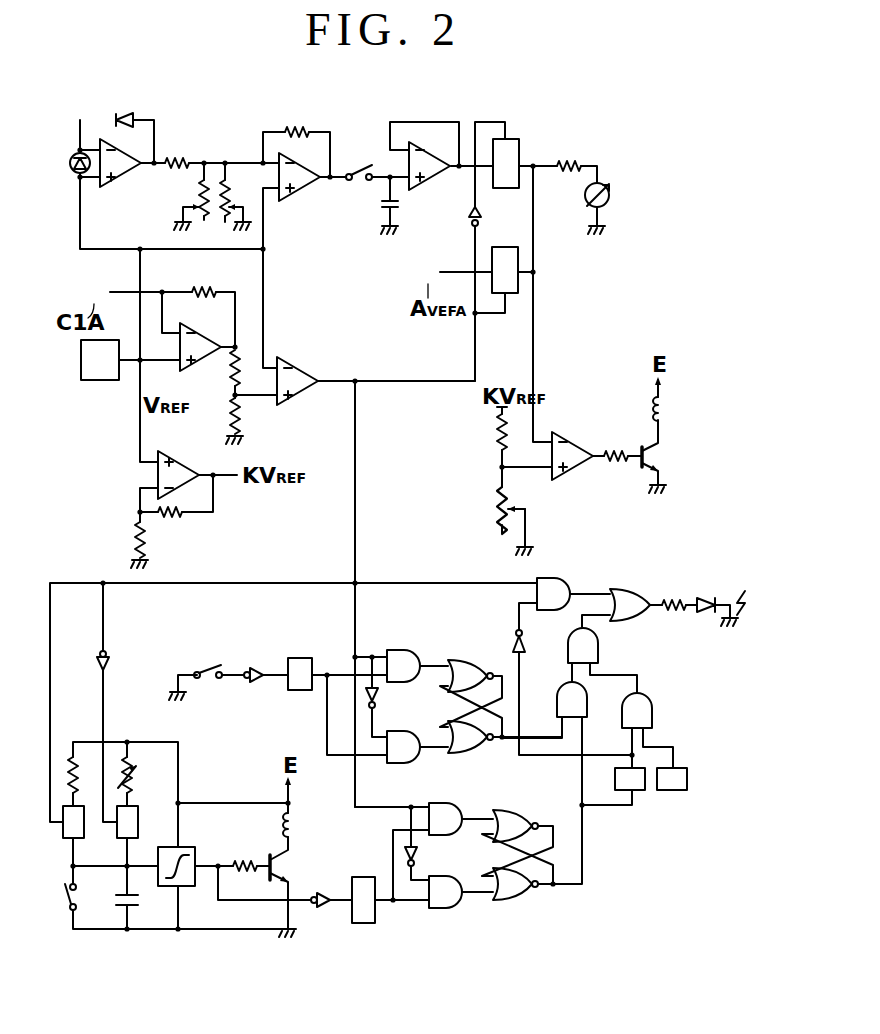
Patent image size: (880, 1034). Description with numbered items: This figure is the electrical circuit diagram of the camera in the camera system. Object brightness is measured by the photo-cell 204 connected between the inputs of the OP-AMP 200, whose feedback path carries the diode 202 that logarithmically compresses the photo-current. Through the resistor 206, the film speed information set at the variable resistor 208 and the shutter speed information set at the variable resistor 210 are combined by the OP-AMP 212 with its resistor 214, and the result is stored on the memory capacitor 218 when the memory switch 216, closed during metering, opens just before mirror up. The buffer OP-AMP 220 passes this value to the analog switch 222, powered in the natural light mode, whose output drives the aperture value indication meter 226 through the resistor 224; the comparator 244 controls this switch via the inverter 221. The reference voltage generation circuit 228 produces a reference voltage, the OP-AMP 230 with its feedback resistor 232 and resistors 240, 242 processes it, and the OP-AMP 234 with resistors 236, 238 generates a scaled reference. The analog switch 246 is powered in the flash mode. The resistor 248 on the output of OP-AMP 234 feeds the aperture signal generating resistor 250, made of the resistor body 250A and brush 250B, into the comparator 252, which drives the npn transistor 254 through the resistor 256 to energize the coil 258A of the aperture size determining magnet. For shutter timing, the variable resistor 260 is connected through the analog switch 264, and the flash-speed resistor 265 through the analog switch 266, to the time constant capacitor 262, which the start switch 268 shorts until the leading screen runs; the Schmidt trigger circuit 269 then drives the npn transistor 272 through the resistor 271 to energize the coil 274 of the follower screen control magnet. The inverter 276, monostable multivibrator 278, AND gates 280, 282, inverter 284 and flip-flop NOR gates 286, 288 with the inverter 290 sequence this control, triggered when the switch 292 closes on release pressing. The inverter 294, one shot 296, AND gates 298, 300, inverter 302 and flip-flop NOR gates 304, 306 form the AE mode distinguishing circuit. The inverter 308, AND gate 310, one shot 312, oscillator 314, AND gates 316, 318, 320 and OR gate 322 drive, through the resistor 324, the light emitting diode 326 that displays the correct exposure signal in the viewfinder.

The OP-AMP 200 is at (127, 180).
The diode 202 is at (126, 114).
The photo-cell 204 is at (76, 172).
The resistor 206 is at (179, 158).
The variable resistor 208 is at (199, 202).
The variable resistor 210 is at (230, 180).
The OP-AMP 212 is at (299, 200).
The resistor 214 is at (297, 128).
The memory switch 216 is at (356, 166).
The memory capacitor 218 is at (382, 206).
The OP-AMP 220 is at (433, 178).
The inverter 221 is at (470, 218).
The analog switch 222 is at (520, 142).
The resistor 224 is at (569, 162).
The aperture value indication meter 226 is at (608, 197).
The reference voltage generation circuit 228 is at (100, 380).
The OP-AMP 230 is at (202, 362).
The resistor 232 is at (204, 290).
The OP-AMP 234 is at (184, 464).
The resistor 236 is at (138, 538).
The resistor 238 is at (179, 514).
The resistor 240 is at (240, 368).
The resistor 242 is at (239, 416).
The comparator 244 is at (302, 366).
The analog switch 246 is at (519, 286).
The resistor 248 is at (498, 432).
The aperture signal generating resistor 250 is at (498, 505).
The resistor body 250A is at (502, 530).
The brush 250B is at (526, 514).
The comparator 252 is at (572, 436).
The npn transistor 254 is at (658, 454).
The resistor 256 is at (617, 458).
The coil of aperture size determining magnet 258A is at (664, 409).
The variable resistor 260 is at (132, 758).
The time constant capacitor 262 is at (138, 904).
The analog switch 264 is at (139, 818).
The resistor 265 is at (76, 756).
The analog switch 266 is at (82, 828).
The start switch 268 is at (70, 910).
The Schmidt trigger circuit 269 is at (184, 916).
The resistor 271 is at (245, 860).
The npn transistor 272 is at (288, 862).
The coil of follower shutter screen control magnet 274 is at (296, 824).
The inverter 276 is at (323, 906).
The monostable multivibrator 278 is at (363, 924).
The AND gate 280 is at (443, 802).
The AND gate 282 is at (445, 908).
The inverter 284 is at (418, 852).
The NOR gate 286 is at (509, 900).
The NOR gate 288 is at (518, 812).
The inverter 290 is at (108, 660).
The switch 292 is at (206, 666).
The inverter 294 is at (256, 682).
The one shot 296 is at (299, 658).
The AND gate 298 is at (401, 650).
The AND gate 300 is at (396, 764).
The inverter 302 is at (376, 700).
The NOR gate 304 is at (462, 660).
The NOR gate 306 is at (472, 754).
The inverter 308 is at (515, 634).
The AND gate 310 is at (541, 578).
The one shot 312 is at (635, 792).
The oscillator 314 is at (674, 791).
The AND gate 316 is at (655, 710).
The AND gate 318 is at (558, 688).
The AND gate 320 is at (597, 644).
The OR gate 322 is at (624, 590).
The resistor 324 is at (673, 610).
The light emitting diode 326 is at (706, 596).